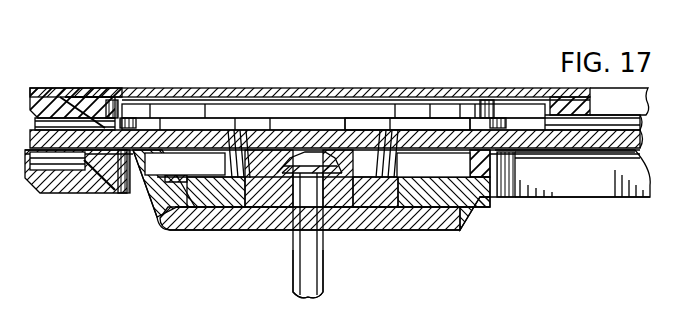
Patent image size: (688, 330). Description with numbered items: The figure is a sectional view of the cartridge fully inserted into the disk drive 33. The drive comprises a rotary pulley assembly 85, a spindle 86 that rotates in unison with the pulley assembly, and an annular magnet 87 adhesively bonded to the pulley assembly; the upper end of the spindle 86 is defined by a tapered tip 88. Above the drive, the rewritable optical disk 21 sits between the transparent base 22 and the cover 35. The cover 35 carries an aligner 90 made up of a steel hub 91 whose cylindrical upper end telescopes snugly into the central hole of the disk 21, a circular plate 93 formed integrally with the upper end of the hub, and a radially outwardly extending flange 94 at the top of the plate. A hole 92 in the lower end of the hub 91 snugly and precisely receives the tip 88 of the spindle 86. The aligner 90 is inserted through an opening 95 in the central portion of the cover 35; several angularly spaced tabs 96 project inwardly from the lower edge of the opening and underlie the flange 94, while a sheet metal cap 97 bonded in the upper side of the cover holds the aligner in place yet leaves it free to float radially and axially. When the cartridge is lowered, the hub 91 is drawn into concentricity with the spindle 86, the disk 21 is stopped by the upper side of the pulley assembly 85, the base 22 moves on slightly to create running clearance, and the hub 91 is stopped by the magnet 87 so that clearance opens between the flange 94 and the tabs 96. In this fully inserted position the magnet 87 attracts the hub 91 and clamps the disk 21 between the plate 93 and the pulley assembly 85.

The rewritable optical disk 21 is at (553, 152).
The base 22 is at (62, 187).
The disk drive 33 is at (430, 244).
The cover 35 is at (52, 88).
The rotary pulley assembly 85 is at (393, 222).
The spindle 86 is at (293, 278).
The annular magnet 87 is at (232, 207).
The tapered tip 88 is at (310, 152).
The aligner 90 is at (397, 122).
The hub 91 is at (233, 166).
The hole 92 is at (312, 155).
The circular plate 93 is at (207, 118).
The flange 94 is at (492, 110).
The opening 95 is at (108, 108).
The tabs 96 is at (125, 170).
The sheet metal cap 97 is at (287, 90).